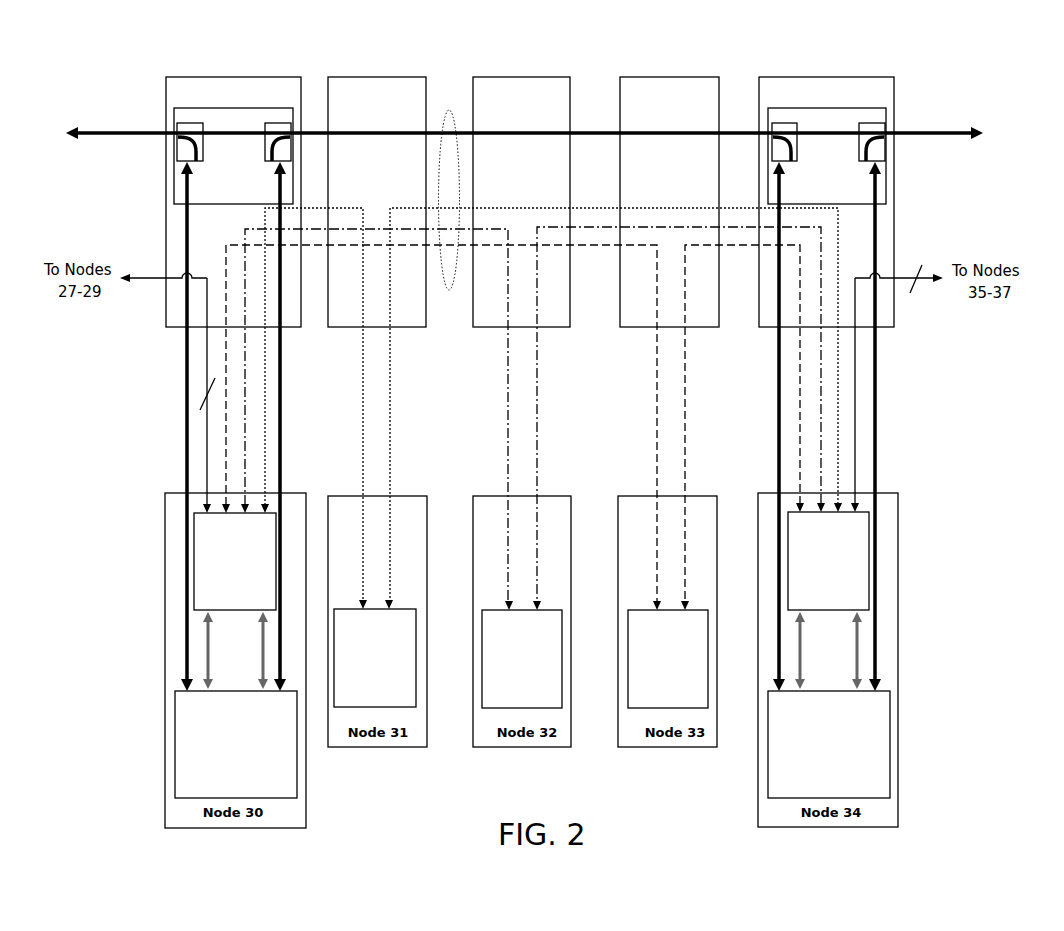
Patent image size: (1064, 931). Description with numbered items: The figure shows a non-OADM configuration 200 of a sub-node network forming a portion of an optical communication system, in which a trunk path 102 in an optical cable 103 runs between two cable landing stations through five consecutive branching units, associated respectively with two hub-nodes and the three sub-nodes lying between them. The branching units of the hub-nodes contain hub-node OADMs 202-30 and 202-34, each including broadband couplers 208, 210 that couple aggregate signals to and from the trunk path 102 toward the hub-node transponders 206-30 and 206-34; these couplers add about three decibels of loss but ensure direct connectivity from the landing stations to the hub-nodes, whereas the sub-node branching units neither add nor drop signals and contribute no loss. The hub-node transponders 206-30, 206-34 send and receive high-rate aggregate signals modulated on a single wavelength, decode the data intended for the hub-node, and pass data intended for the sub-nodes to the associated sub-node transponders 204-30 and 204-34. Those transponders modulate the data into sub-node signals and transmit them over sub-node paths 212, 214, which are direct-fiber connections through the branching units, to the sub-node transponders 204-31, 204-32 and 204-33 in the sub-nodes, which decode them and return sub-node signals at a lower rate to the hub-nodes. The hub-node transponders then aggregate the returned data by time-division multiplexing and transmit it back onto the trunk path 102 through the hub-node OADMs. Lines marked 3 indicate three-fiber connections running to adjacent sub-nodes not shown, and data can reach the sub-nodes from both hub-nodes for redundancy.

The non-OADM configuration 200 is at (125, 85).
The trunk path 102 is at (595, 128).
The optical cable 103 is at (442, 102).
The broadband coupler 208 is at (190, 123).
The broadband coupler 210 is at (279, 123).
The hub-node OADM 202-30 is at (208, 158).
The hub-node OADM 202-34 is at (803, 158).
The sub-node transponder 204-30 is at (210, 589).
The sub-node transponder 204-31 is at (350, 687).
The sub-node transponder 204-32 is at (497, 687).
The sub-node transponder 204-33 is at (643, 687).
The sub-node transponder 204-34 is at (804, 586).
The hub-node transponder 206-30 is at (211, 760).
The hub-node transponder 206-34 is at (804, 760).
The sub-node path 212 is at (317, 252).
The sub-node path 214 is at (732, 254).
The fiber count indicator 3 is at (565, 328).